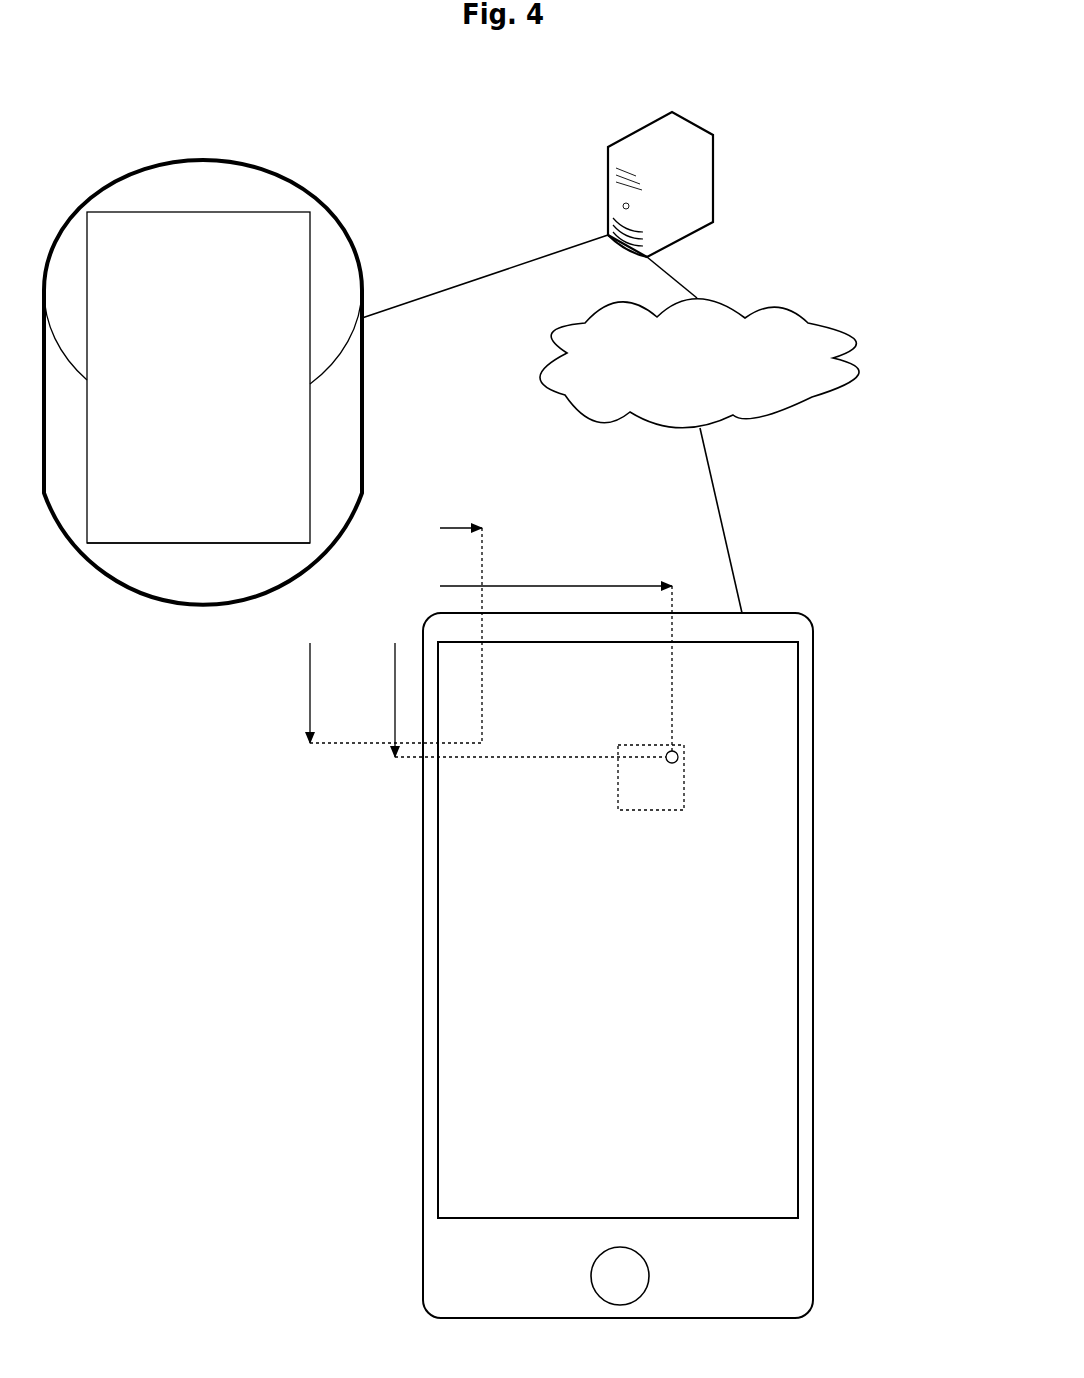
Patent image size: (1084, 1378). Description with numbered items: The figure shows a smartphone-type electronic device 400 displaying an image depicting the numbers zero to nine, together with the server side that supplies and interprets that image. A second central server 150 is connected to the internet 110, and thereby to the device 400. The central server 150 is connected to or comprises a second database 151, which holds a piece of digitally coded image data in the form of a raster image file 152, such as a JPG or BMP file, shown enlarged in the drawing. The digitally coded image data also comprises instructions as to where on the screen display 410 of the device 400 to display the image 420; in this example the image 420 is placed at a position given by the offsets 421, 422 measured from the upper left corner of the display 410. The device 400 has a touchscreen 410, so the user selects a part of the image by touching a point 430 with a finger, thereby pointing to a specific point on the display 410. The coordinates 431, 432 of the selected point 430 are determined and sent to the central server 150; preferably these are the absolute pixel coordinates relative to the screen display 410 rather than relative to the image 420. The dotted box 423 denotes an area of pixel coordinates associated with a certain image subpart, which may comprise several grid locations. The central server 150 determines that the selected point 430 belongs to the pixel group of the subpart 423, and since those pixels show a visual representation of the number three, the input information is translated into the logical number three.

The internet 110 is at (610, 424).
The second central server 150 is at (660, 184).
The second database 151 is at (203, 382).
The raster image file 152 is at (167, 543).
The electronic device 400 is at (815, 938).
The screen display 410 is at (798, 1026).
The image 420 is at (705, 845).
The horizontal display position coordinate 421 is at (396, 624).
The vertical display position coordinate 422 is at (290, 693).
The image subpart 423 is at (685, 787).
The selected point 430 is at (683, 748).
The horizontal selected point coordinate 431 is at (556, 657).
The vertical selected point coordinate 432 is at (512, 700).